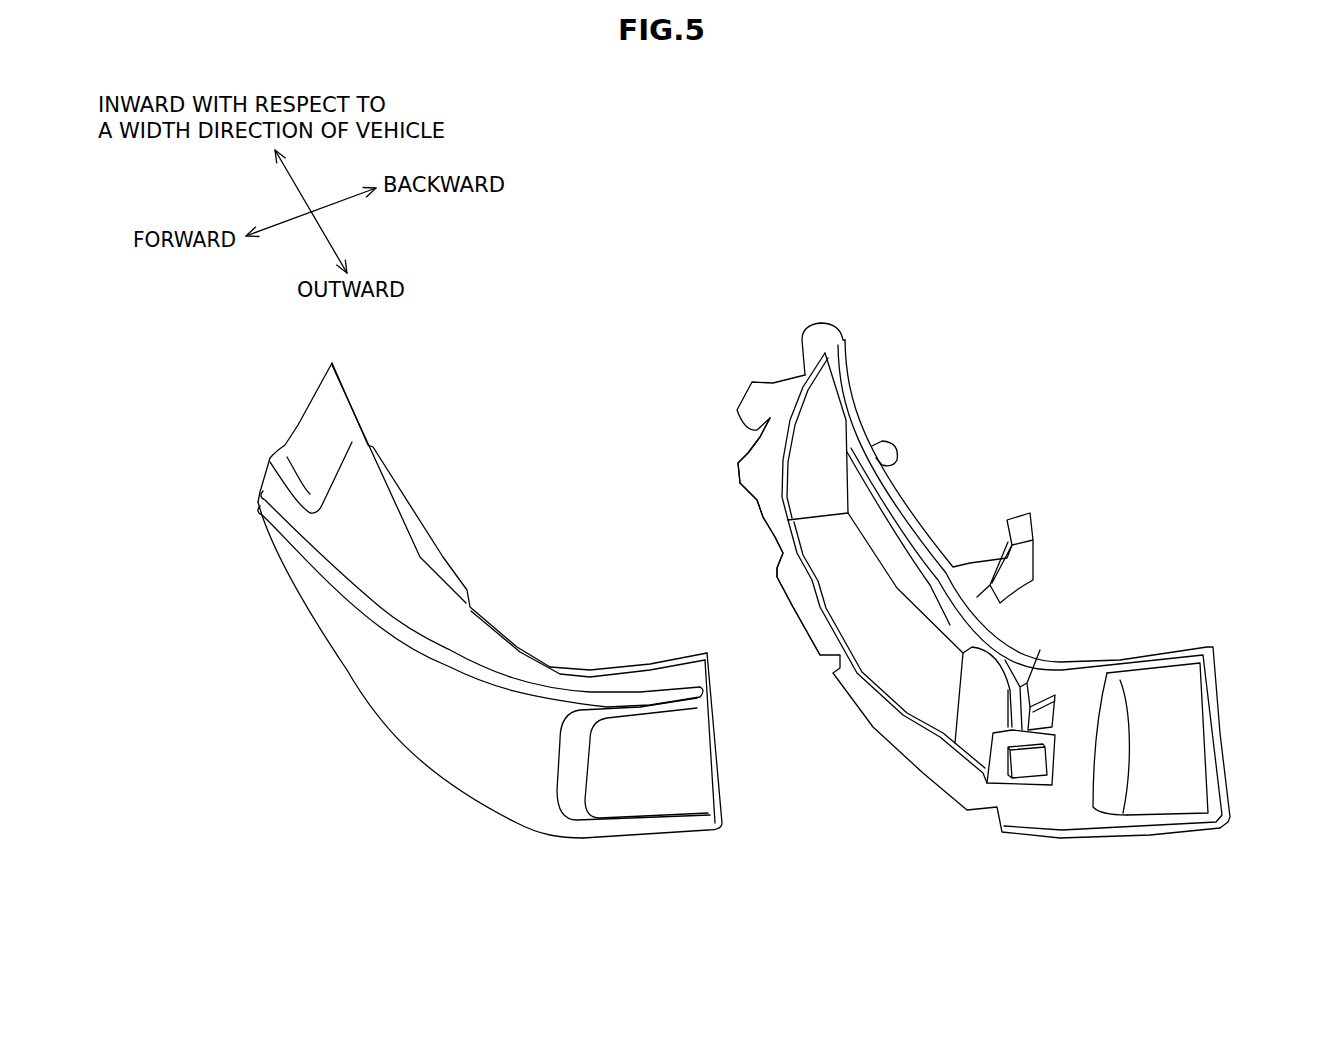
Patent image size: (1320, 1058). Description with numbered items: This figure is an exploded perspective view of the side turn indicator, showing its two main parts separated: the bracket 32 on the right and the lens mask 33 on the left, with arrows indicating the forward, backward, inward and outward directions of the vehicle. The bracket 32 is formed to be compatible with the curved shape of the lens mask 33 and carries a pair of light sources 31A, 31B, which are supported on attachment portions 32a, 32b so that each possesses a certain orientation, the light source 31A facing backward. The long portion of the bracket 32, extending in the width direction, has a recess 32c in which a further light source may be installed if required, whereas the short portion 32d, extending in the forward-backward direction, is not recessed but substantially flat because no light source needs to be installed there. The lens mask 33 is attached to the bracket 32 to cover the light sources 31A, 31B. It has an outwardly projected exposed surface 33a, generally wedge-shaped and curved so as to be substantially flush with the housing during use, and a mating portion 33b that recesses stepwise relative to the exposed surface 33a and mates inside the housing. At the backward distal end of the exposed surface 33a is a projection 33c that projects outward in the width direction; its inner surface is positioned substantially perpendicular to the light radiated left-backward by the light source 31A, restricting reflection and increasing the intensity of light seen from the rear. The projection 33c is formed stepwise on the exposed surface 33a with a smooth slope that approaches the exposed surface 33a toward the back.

The bracket 32 is at (1024, 616).
The attachment portion 32a is at (1042, 686).
The attachment portion 32b is at (998, 773).
The recess 32c is at (843, 603).
The short portion 32d is at (1183, 733).
The light source 31A is at (1040, 717).
The light source 31B is at (1027, 768).
The lens mask 33 is at (490, 634).
The exposed surface 33a is at (417, 723).
The mating portion 33b is at (442, 608).
The projection 33c is at (603, 795).